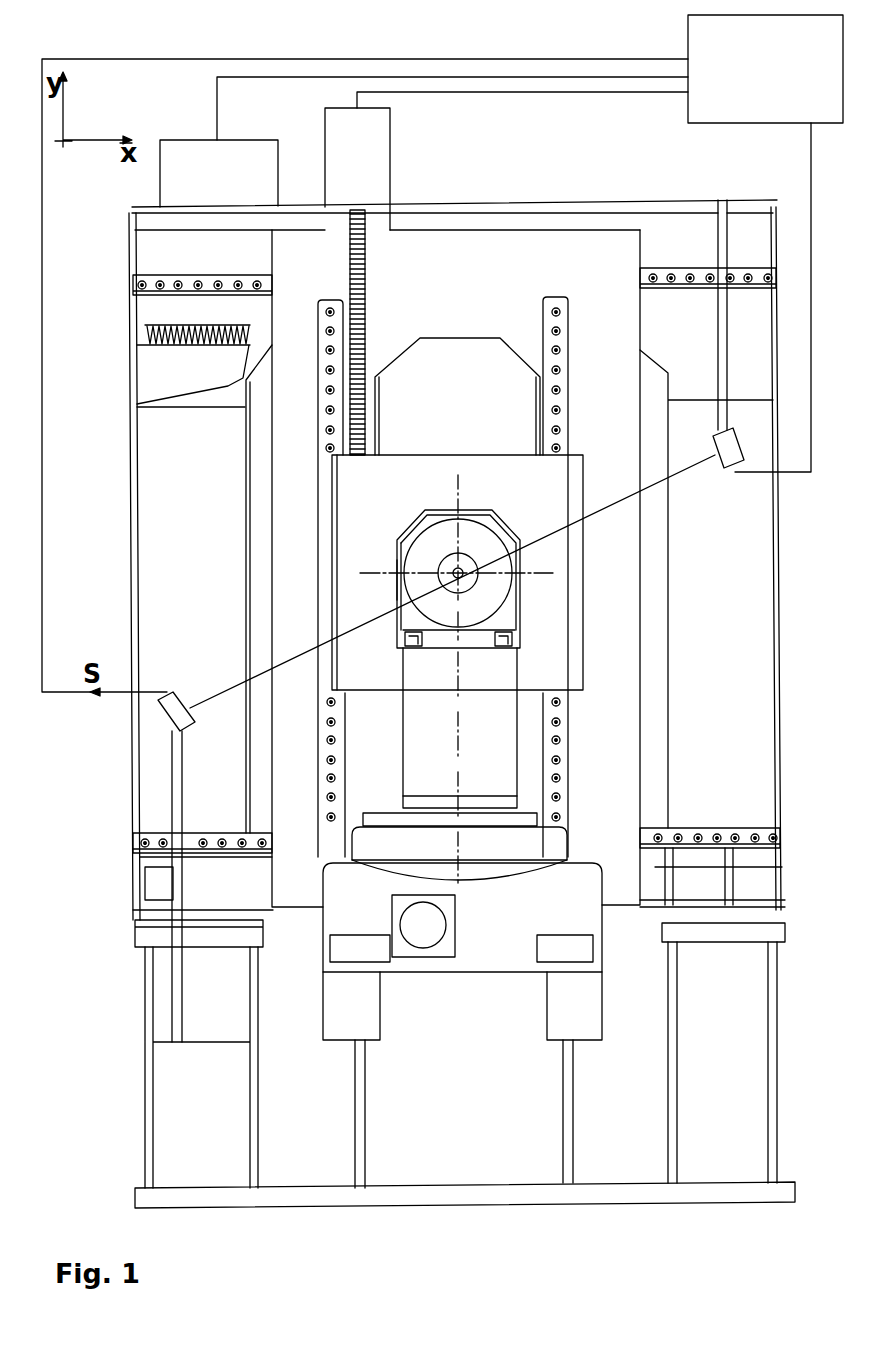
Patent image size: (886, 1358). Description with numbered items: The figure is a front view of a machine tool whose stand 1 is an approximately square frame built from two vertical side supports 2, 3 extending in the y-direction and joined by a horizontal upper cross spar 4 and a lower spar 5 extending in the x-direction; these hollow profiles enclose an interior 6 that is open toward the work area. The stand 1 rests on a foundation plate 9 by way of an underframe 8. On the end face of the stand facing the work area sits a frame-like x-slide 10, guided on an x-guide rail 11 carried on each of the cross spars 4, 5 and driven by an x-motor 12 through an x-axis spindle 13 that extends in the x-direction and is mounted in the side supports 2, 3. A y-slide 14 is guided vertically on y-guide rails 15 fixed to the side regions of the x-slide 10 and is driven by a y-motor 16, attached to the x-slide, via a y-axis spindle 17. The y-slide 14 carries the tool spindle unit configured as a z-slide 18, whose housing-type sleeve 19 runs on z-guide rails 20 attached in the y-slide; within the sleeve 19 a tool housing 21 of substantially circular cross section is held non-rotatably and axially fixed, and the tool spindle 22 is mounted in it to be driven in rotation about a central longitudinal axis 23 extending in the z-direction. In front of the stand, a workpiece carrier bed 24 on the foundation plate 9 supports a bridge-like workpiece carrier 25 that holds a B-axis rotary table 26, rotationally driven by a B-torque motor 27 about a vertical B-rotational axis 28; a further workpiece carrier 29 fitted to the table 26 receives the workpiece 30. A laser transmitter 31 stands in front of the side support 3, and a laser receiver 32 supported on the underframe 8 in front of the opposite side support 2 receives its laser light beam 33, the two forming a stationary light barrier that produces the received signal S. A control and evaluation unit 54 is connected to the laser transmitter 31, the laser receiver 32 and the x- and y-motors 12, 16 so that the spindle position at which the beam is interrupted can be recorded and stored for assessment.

The stand 1 is at (698, 184).
The side support 2 is at (168, 535).
The side support 3 is at (740, 680).
The upper cross spar 4 is at (578, 220).
The lower spar 5 is at (655, 872).
The interior 6 is at (257, 566).
The underframe 8 is at (147, 1080).
The foundation plate 9 is at (135, 1196).
The x-slide 10 is at (487, 245).
The x-guide rail 11 is at (130, 284).
The x-motor 12 is at (170, 168).
The x-axis spindle 13 is at (145, 323).
The y-slide 14 is at (345, 497).
The y-guide rail 15 is at (330, 298).
The y-motor 16 is at (333, 126).
The y-axis spindle 17 is at (367, 263).
The z-slide 18 is at (526, 632).
The sleeve 19 is at (520, 512).
The z-guide rail 20 is at (506, 660).
The tool housing 21 is at (515, 606).
The tool spindle 22 is at (333, 623).
The central longitudinal axis 23 is at (400, 543).
The workpiece carrier bed 24 is at (311, 1165).
The workpiece carrier 25 is at (585, 904).
The B-axis rotary table 26 is at (512, 847).
The B-torque motor 27 is at (448, 952).
The B-rotational axis 28 is at (463, 785).
The workpiece carrier 29 is at (503, 818).
The workpiece 30 is at (490, 735).
The laser transmitter 31 is at (733, 463).
The laser receiver 32 is at (167, 710).
The laser light beam 33 is at (688, 477).
The control and evaluation unit 54 is at (690, 116).